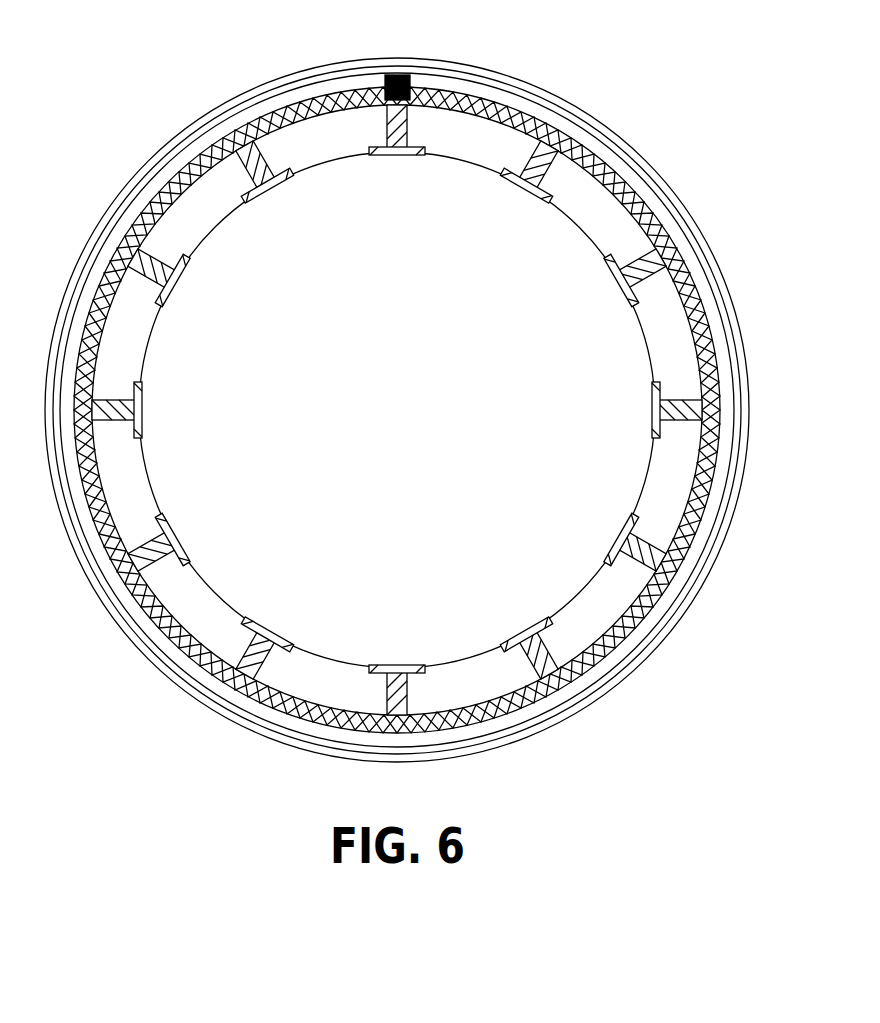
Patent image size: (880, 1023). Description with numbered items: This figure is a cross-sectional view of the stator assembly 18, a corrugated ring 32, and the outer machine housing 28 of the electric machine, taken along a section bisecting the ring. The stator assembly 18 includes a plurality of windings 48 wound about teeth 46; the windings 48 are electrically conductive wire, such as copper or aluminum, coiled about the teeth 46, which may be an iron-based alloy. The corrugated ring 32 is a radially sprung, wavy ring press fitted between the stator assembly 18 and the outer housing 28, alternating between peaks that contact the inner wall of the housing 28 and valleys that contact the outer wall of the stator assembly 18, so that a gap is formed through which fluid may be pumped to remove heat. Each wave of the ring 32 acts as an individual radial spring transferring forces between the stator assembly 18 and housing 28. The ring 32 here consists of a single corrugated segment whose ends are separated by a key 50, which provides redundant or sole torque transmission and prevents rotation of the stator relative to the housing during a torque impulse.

The stator assembly 18 is at (520, 145).
The outer machine housing 28 is at (665, 190).
The corrugated rings 32 is at (577, 135).
The teeth 46 is at (203, 215).
The windings 48 is at (258, 190).
The key 50 is at (398, 75).